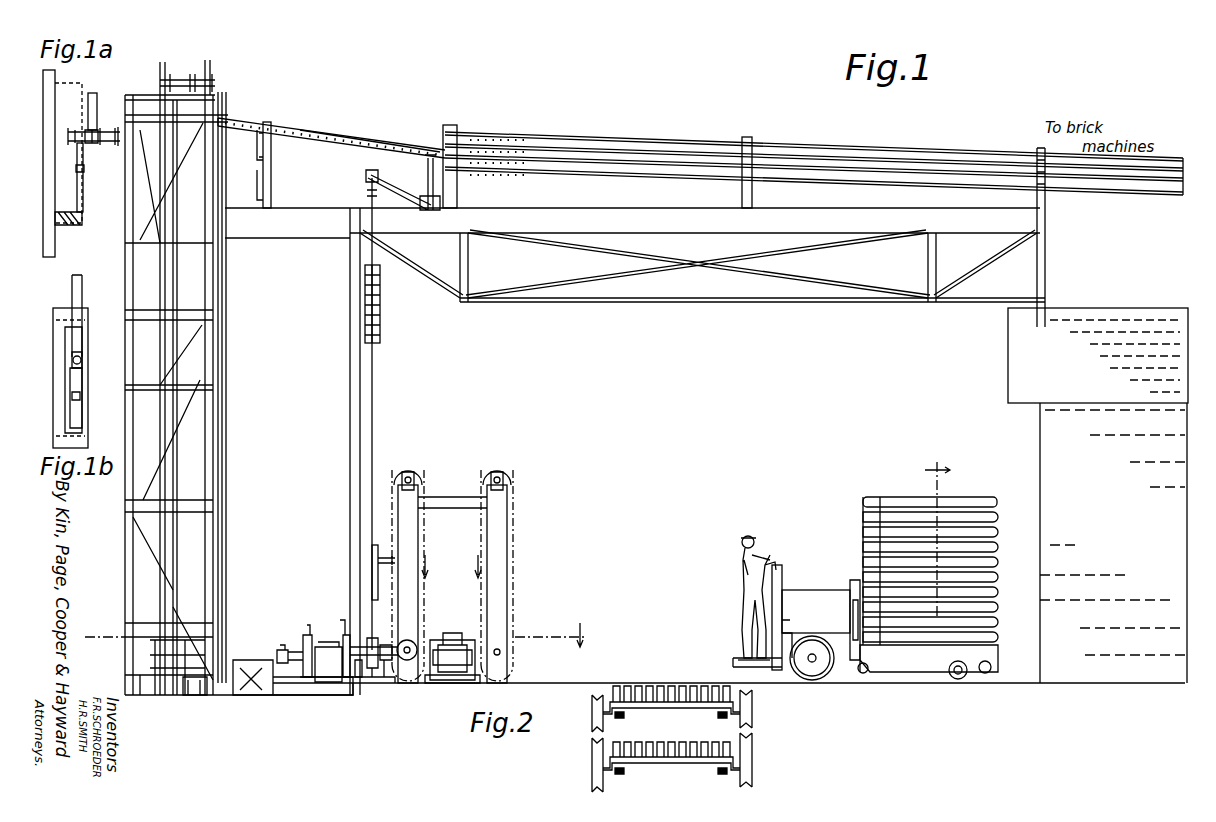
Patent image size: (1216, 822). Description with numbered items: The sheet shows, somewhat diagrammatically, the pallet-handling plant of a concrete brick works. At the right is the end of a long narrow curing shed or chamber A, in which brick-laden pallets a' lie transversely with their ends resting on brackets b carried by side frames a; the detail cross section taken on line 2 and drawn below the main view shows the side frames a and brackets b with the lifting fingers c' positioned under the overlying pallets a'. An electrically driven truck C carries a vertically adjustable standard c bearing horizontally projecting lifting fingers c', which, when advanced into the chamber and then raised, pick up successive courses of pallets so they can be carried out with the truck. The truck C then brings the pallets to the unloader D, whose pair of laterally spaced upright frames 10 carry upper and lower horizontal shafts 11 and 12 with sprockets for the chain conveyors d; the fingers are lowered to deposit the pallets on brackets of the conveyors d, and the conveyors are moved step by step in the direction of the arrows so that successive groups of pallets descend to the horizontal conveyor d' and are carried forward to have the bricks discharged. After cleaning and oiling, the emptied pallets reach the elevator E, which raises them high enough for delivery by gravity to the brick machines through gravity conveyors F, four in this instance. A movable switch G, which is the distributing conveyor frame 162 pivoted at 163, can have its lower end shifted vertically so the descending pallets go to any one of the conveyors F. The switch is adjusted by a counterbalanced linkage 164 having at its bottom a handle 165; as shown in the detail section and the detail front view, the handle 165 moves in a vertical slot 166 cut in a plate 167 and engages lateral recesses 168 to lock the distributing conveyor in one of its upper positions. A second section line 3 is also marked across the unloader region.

In FIG. 1, the upright frame 10 is at (487, 529).
In FIG. 1, the horizontal shaft 11 is at (408, 478).
In FIG. 1, the horizontal shaft 12 is at (500, 652).
In FIG. 1, the frame 162 is at (341, 130).
In FIG. 1, the pivot 163 is at (270, 124).
In FIG. 1, the counterbalanced linkage 164 is at (405, 195).
In FIG. 1, the handle 165 is at (380, 562).
In FIG. 1A, the handle 165 is at (104, 128).
In FIG. 1A, the vertical slot 166 is at (82, 196).
In FIG. 1B, the vertical slot 166 is at (76, 380).
In FIG. 1, the plate 167 is at (372, 596).
In FIG. 1B, the plate 167 is at (82, 365).
In FIG. 1A, the lateral recesses 168 is at (83, 172).
In FIG. 1B, the lateral recesses 168 is at (78, 402).
In FIG. 1, the section line 2 is at (936, 533).
In FIG. 1, the section line 3- 3 is at (342, 633).
In FIG. 1, the curing shed A is at (1098, 495).
In FIG. 1, the truck C is at (865, 588).
In FIG. 1, the standard c is at (915, 495).
In FIG. 1, the lifting fingers c' is at (930, 499).
In FIG. 2, the lifting fingers c' is at (671, 749).
In FIG. 1, the unloader D is at (452, 562).
In FIG. 1, the conveyors d is at (452, 575).
In FIG. 1, the horizontal conveyor d' is at (452, 647).
In FIG. 1, the elevator E is at (187, 377).
In FIG. 1, the gravity conveyors F is at (813, 164).
In FIG. 1, the movable switch G is at (331, 138).
In FIG. 2, the side frames a is at (668, 729).
In FIG. 2, the pallets a' is at (671, 738).
In FIG. 2, the brackets b is at (600, 712).